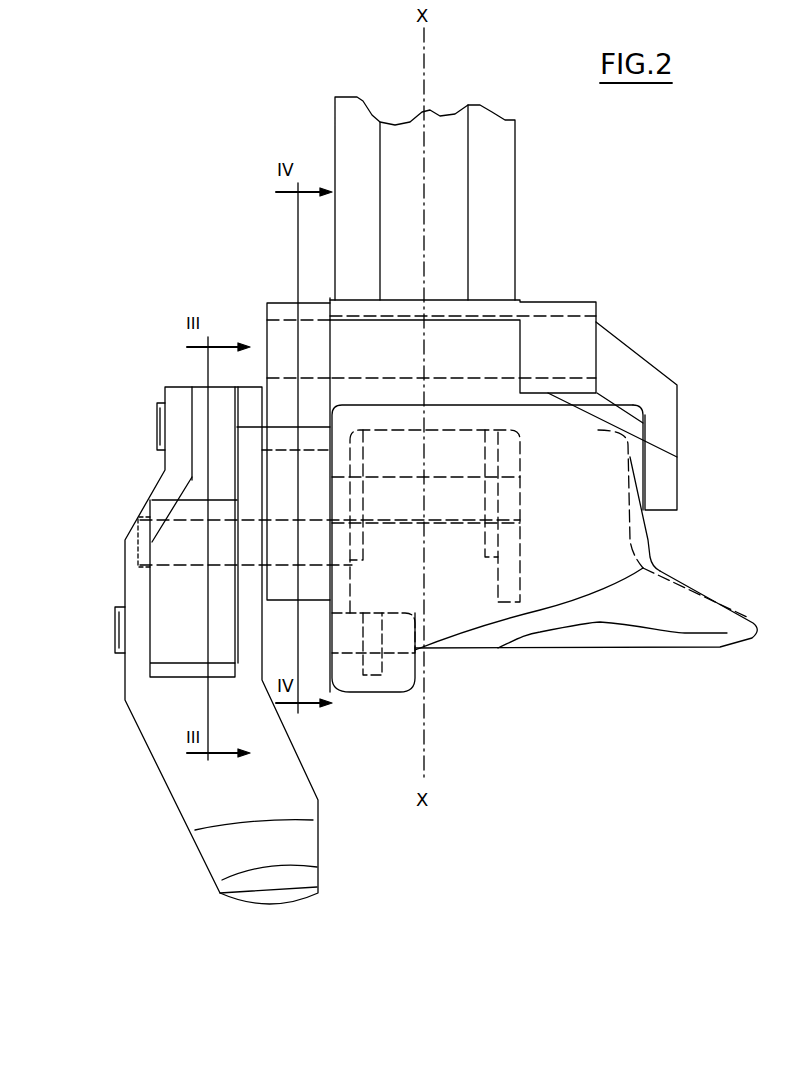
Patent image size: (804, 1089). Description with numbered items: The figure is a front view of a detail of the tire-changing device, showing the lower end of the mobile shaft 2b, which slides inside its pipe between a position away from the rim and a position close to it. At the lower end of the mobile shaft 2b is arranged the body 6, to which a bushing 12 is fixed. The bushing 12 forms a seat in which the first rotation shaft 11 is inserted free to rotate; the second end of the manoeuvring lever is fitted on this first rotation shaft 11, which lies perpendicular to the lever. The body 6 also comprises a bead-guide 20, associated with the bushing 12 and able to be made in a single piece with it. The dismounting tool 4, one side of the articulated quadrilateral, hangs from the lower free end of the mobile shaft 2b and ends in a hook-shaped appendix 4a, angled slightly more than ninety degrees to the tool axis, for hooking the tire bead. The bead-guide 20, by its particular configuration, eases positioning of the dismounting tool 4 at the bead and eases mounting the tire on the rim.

The mobile shaft 2b is at (505, 213).
The first rotation shaft 11 is at (500, 350).
The bushing 12 is at (410, 300).
The body 6 is at (405, 577).
The bead-guide 20 is at (703, 613).
The dismounting tool 4 is at (167, 732).
The appendix 4a is at (223, 843).